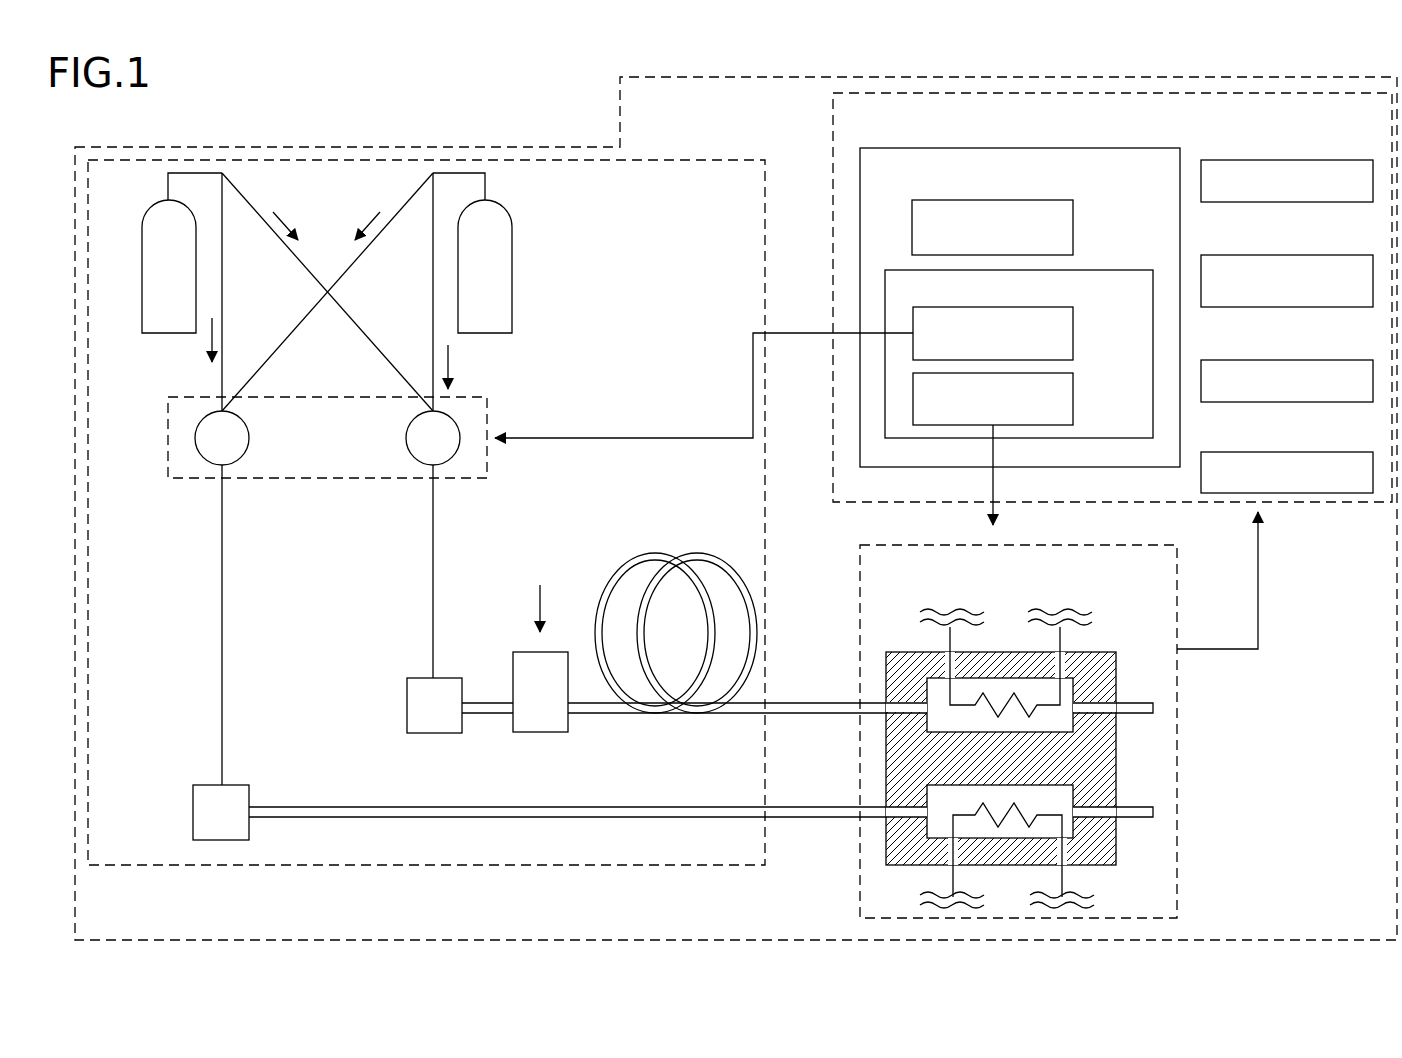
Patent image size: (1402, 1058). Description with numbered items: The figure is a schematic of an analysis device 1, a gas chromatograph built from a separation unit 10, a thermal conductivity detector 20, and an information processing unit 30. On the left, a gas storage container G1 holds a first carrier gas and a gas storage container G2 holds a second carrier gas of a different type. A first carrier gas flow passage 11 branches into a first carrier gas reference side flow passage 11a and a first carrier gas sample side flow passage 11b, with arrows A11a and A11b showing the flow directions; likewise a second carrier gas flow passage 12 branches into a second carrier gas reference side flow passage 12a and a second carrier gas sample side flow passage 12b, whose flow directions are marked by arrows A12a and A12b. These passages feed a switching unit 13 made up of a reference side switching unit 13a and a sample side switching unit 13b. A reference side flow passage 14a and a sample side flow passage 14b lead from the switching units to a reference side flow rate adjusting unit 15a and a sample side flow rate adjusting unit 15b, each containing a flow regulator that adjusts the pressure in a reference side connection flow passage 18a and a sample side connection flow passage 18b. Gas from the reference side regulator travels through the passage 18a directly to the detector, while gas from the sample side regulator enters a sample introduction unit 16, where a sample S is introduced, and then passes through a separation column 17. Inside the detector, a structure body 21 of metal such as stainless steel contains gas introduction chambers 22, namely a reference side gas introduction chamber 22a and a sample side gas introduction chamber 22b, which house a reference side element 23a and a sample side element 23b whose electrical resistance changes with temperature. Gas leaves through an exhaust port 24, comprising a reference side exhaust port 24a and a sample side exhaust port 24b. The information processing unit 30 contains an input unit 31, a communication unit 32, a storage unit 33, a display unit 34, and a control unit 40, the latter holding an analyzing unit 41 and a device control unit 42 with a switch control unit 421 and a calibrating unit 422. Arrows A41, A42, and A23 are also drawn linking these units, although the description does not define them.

The analysis device 1 is at (515, 148).
The separation unit 10 is at (672, 172).
The first carrier gas flow passage 11 is at (208, 165).
The first carrier gas reference side flow passage 11a is at (224, 305).
The first carrier gas sample side flow passage 11b is at (232, 168).
The second carrier gas flow passage 12 is at (450, 168).
The second carrier gas reference side flow passage 12a is at (405, 168).
The second carrier gas sample side flow passage 12b is at (431, 305).
The switching unit 13 is at (331, 427).
The reference side switching unit 13a is at (205, 440).
The sample side switching unit 13b is at (425, 445).
The reference side flow passage 14a is at (224, 610).
The sample side flow passage 14b is at (435, 530).
The reference side flow rate adjusting unit 15a is at (235, 787).
The sample side flow rate adjusting unit 15b is at (447, 680).
The sample introduction unit 16 is at (545, 652).
The separation column 17 is at (632, 556).
The reference side connection flow passage 18a is at (525, 810).
The sample side connection flow passage 18b is at (740, 715).
The thermal conductivity detector 20 is at (972, 731).
The structure body 21 is at (1100, 650).
The gas introduction chambers 22 is at (847, 760).
The reference side gas introduction chamber 22a is at (893, 793).
The sample side gas introduction chamber 22b is at (893, 722).
The reference side element 23a is at (995, 855).
The sample side element 23b is at (990, 668).
The exhaust port 24 is at (1189, 760).
The reference side exhaust port 24a is at (1158, 795).
The sample side exhaust port 24b is at (1158, 712).
The information processing unit 30 is at (845, 140).
The input unit 31 is at (1233, 160).
The communication unit 32 is at (1233, 255).
The storage unit 33 is at (1233, 360).
The display unit 34 is at (1233, 452).
The control unit 40 is at (868, 215).
The analyzing unit 41 is at (1075, 222).
The device control unit 42 is at (885, 320).
The switch control unit 421 is at (1075, 325).
The calibrating unit 422 is at (1075, 390).
The gas storage container G1 is at (157, 283).
The gas storage container G2 is at (500, 270).
The sample S is at (539, 598).
The arrow A11a is at (206, 350).
The arrow A11b is at (284, 203).
The arrow A12a is at (356, 203).
The arrow A12b is at (455, 345).
The switch control signal A41 is at (685, 435).
The adjusting signal A42 is at (990, 515).
The detection signal A23 is at (1260, 590).